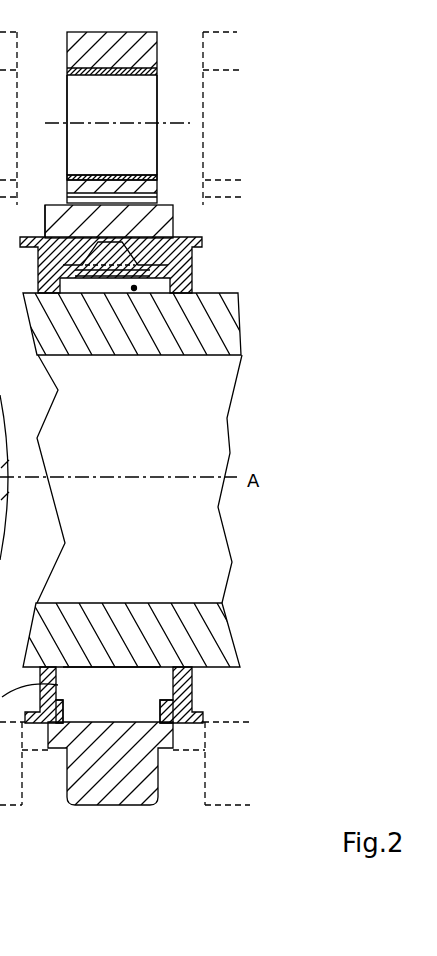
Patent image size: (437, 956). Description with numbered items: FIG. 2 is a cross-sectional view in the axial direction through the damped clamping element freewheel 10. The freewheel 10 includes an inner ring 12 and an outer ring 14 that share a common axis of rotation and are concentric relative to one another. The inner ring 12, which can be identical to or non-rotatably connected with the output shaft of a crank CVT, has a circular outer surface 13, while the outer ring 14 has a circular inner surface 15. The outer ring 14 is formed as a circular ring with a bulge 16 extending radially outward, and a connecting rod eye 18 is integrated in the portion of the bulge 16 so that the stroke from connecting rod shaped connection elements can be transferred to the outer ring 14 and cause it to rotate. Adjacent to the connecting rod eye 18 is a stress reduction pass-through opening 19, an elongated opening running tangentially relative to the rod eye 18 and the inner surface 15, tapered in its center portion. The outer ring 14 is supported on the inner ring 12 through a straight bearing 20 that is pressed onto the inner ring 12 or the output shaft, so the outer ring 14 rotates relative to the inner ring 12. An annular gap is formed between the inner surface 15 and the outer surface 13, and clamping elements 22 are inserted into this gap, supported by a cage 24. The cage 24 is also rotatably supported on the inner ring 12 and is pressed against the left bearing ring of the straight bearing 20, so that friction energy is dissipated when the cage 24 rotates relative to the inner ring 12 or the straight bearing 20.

The damped clamping element freewheel 10 is at (299, 396).
The inner ring 12 is at (152, 622).
The outer surface 13 is at (222, 292).
The outer ring 14 is at (146, 218).
The inner surface 15 is at (46, 228).
The bulge 16 is at (157, 46).
The connecting rod eye 18 is at (157, 99).
The stress reduction pass-through opening 19 is at (158, 192).
The straight bearing 20 is at (182, 275).
The clamping elements 22 is at (147, 706).
The cage 24 is at (134, 288).